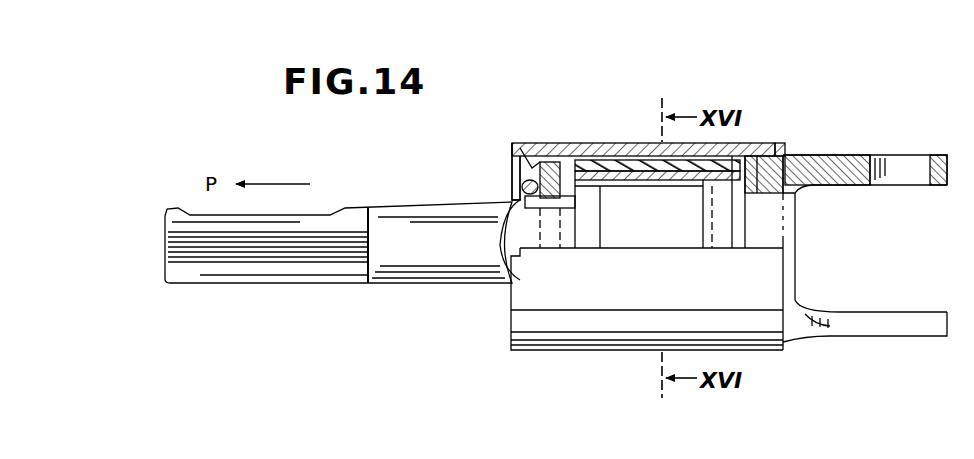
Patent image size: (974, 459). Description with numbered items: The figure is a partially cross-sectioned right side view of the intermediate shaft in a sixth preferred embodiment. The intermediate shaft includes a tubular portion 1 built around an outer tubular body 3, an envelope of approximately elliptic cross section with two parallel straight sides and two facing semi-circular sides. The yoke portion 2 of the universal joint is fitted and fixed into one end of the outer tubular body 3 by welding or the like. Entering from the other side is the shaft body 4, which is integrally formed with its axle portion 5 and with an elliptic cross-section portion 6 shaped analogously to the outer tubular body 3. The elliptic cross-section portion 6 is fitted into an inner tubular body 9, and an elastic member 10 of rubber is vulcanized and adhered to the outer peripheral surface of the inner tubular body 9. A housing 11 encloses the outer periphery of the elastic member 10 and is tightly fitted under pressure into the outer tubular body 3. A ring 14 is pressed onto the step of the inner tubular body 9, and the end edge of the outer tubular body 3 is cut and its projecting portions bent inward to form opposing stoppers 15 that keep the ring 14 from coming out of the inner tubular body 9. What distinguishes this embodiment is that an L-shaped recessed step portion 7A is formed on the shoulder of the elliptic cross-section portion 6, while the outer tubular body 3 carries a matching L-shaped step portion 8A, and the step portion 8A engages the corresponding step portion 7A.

The tubular portion 1 is at (802, 152).
The yoke portion 2 is at (867, 154).
The outer tubular body 3 is at (778, 143).
The shaft body 4 is at (437, 202).
The axle portion 5 is at (272, 262).
The elliptic cross-section portion 6 is at (684, 252).
The L-shaped step portion 7A is at (565, 205).
The L-shaped step portion 8A is at (552, 160).
The inner tubular body 9 is at (648, 187).
The elastic member 10 is at (579, 168).
The housing 11 is at (610, 160).
The ring 14 is at (524, 185).
The stopper 15 is at (518, 143).